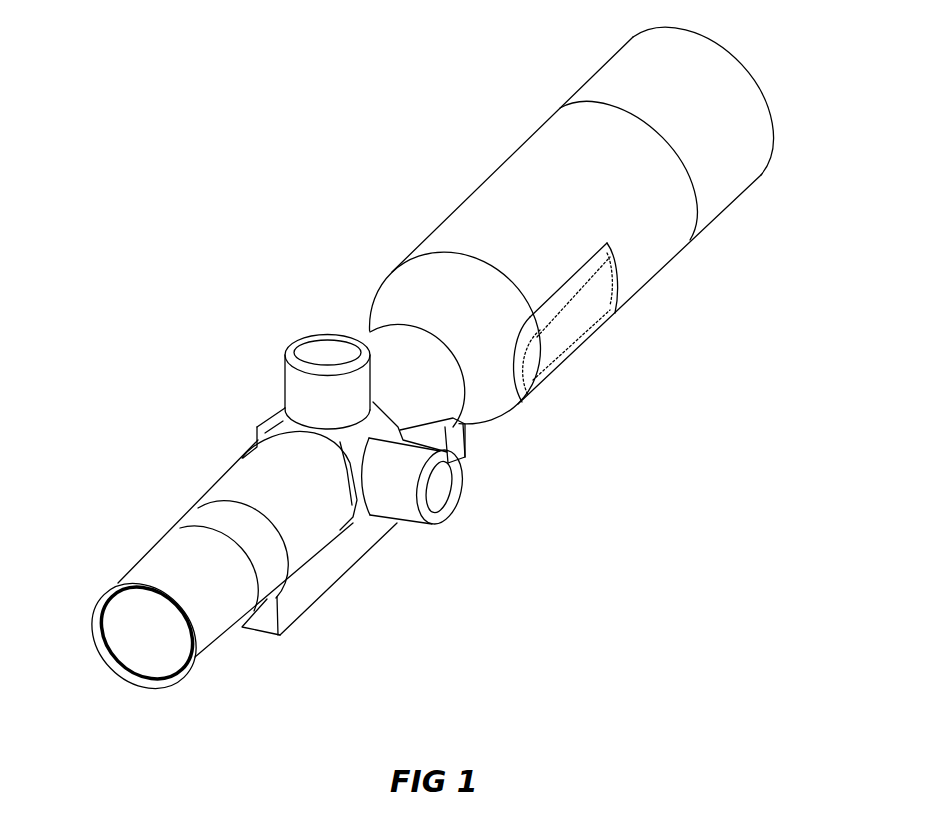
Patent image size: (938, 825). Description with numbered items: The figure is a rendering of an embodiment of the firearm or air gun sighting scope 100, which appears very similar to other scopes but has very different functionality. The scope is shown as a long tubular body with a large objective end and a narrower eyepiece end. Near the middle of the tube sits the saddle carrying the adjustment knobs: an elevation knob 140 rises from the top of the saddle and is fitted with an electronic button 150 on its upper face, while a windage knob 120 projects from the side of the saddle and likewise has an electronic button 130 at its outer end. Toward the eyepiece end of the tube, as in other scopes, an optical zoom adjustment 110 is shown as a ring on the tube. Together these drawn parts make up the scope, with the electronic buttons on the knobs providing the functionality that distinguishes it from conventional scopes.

The firearm or air gun sighting scope 100 is at (150, 80).
The optical zoom adjustment 110 is at (195, 520).
The windage knob 120 is at (407, 518).
The electronic button 130 is at (441, 490).
The elevation knob 140 is at (287, 384).
The electronic button 150 is at (323, 350).